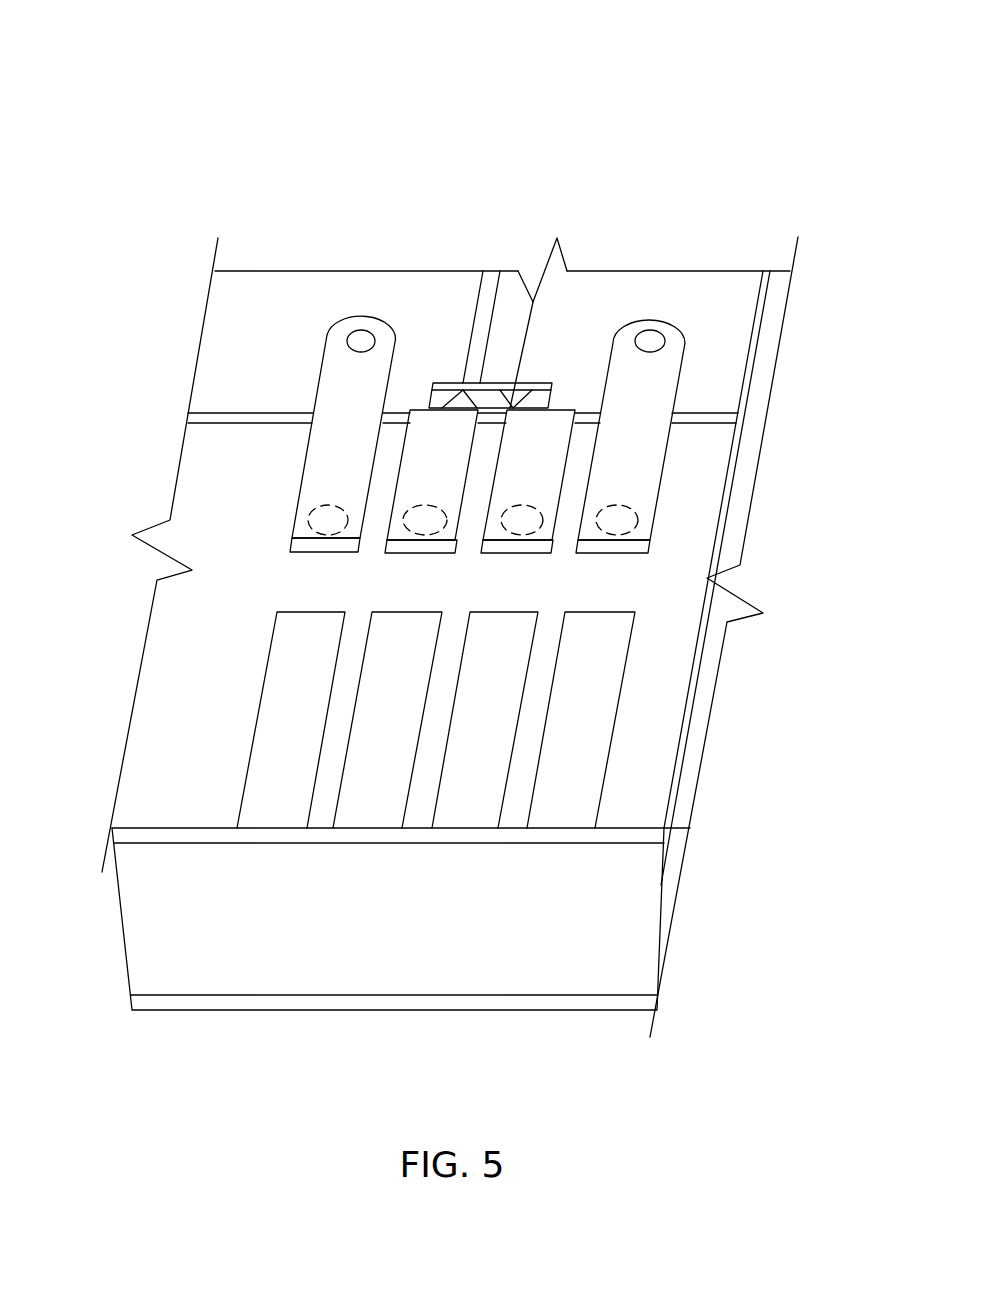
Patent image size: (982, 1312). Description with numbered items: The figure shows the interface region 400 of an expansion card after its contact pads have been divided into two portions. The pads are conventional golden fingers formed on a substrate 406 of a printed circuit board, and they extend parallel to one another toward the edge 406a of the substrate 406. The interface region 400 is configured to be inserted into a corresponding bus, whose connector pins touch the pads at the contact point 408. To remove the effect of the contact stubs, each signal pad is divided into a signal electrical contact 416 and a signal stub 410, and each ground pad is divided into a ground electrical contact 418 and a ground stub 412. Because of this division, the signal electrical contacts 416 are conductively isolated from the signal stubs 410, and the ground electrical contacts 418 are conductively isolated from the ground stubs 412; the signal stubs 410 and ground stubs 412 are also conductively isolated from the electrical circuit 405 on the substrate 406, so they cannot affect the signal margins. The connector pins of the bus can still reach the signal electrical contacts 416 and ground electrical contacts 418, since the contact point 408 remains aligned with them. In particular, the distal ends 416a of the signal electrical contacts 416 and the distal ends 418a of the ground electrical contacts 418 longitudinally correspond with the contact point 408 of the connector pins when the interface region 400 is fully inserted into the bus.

The interface region 400 is at (160, 44).
The electrical circuit 405 is at (505, 315).
The substrate 406 is at (162, 807).
The edge of the substrate 406a is at (663, 830).
The contact point 408 is at (313, 507).
The signal stubs 410 is at (370, 820).
The ground stubs 412 is at (282, 705).
The signal electrical contacts 416 is at (420, 420).
The distal ends of the signal electrical contacts 416a is at (512, 547).
The ground electrical contacts 418 is at (335, 372).
The distal ends of the ground electrical contacts 418a is at (303, 553).